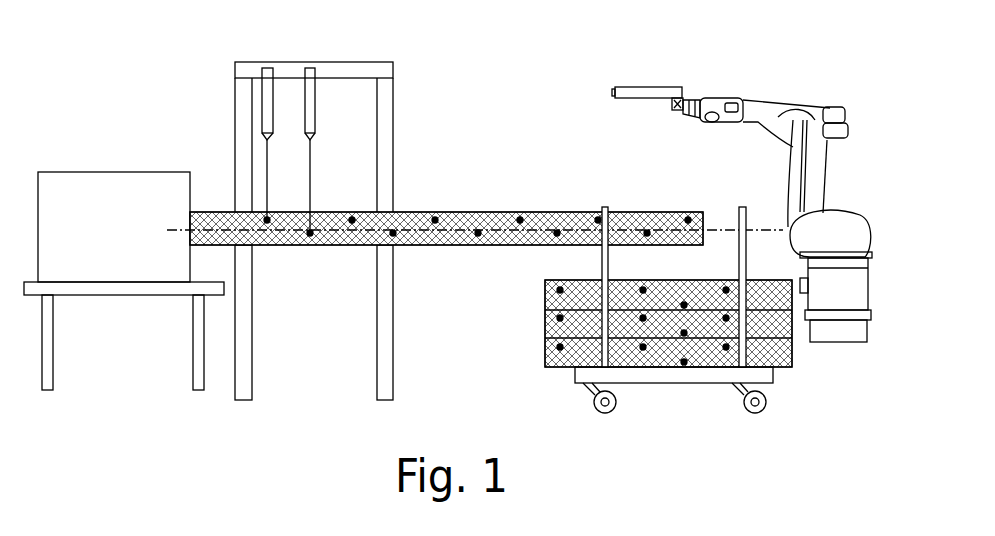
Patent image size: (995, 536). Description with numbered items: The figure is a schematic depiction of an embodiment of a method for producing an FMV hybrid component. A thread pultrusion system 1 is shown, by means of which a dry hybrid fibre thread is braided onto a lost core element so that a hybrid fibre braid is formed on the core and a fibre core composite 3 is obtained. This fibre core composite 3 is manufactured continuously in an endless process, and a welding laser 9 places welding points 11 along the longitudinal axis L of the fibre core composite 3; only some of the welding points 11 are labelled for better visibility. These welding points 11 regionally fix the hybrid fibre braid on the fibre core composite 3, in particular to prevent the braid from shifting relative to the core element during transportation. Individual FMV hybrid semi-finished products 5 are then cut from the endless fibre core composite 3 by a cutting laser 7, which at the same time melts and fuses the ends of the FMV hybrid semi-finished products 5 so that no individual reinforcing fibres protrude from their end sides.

The thread pultrusion system 1 is at (98, 144).
The fibre core composite 3 is at (428, 212).
The FMV hybrid semi-finished product 5 is at (668, 274).
The cutting laser 7 is at (722, 76).
The welding laser 9 is at (262, 99).
The welding points 11 is at (268, 224).
The longitudinal axis L is at (713, 227).